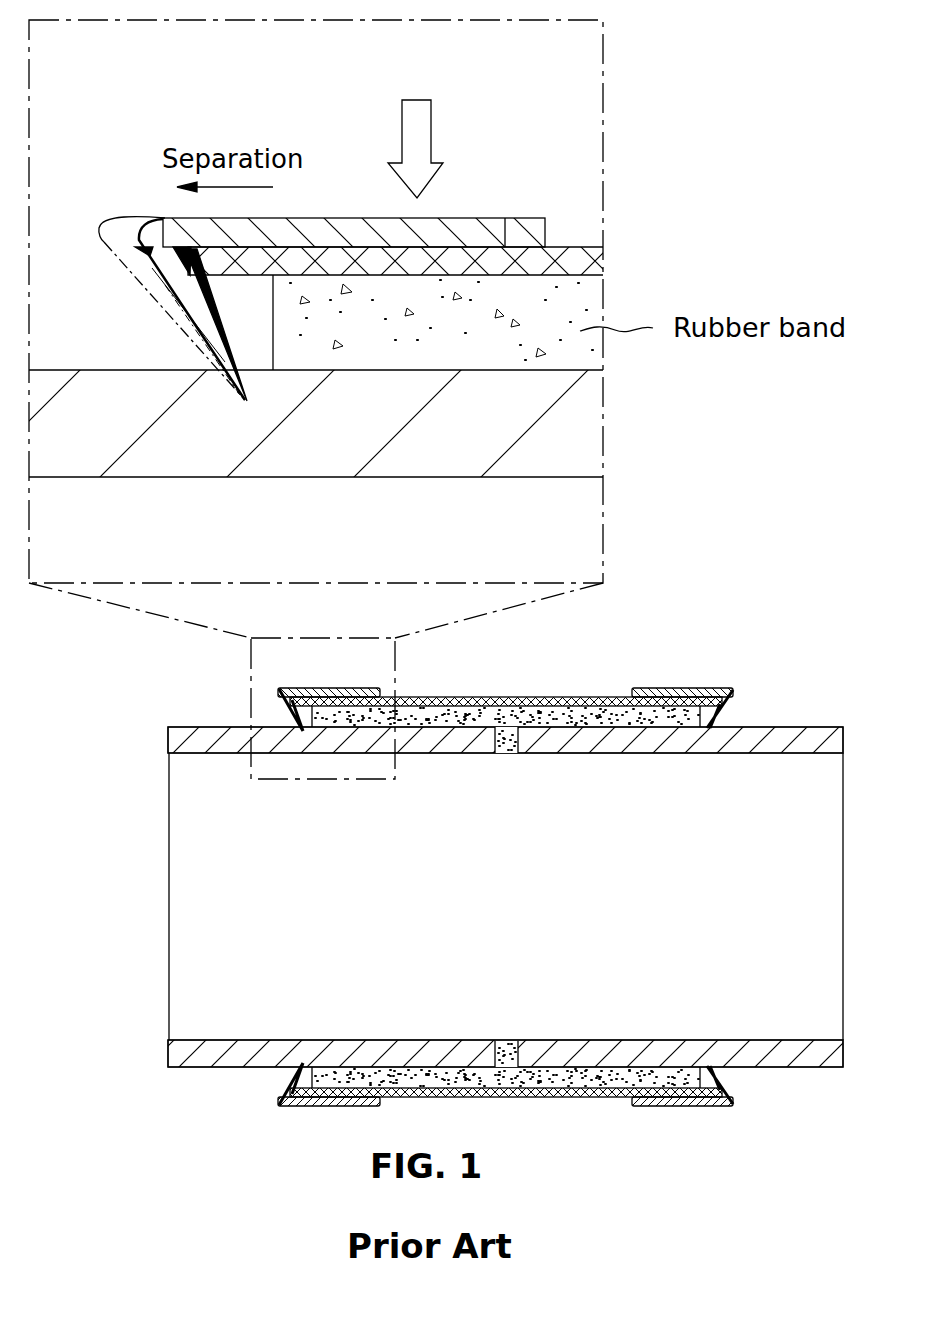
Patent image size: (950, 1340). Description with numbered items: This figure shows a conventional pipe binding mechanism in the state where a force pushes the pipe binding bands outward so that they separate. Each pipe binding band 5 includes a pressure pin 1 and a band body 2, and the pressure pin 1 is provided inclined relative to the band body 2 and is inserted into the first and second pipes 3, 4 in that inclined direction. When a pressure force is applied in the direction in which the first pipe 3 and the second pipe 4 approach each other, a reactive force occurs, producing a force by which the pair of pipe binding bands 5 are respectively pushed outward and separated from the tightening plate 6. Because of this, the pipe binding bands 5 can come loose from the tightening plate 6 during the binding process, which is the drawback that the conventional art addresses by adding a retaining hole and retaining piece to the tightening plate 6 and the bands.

The pressure pin 1 is at (176, 292).
The band body 2 is at (521, 218).
The first pipe 3 is at (173, 466).
The second pipe 4 is at (783, 740).
The pipe binding band 5 is at (703, 672).
The tightening plate 6 is at (597, 263).